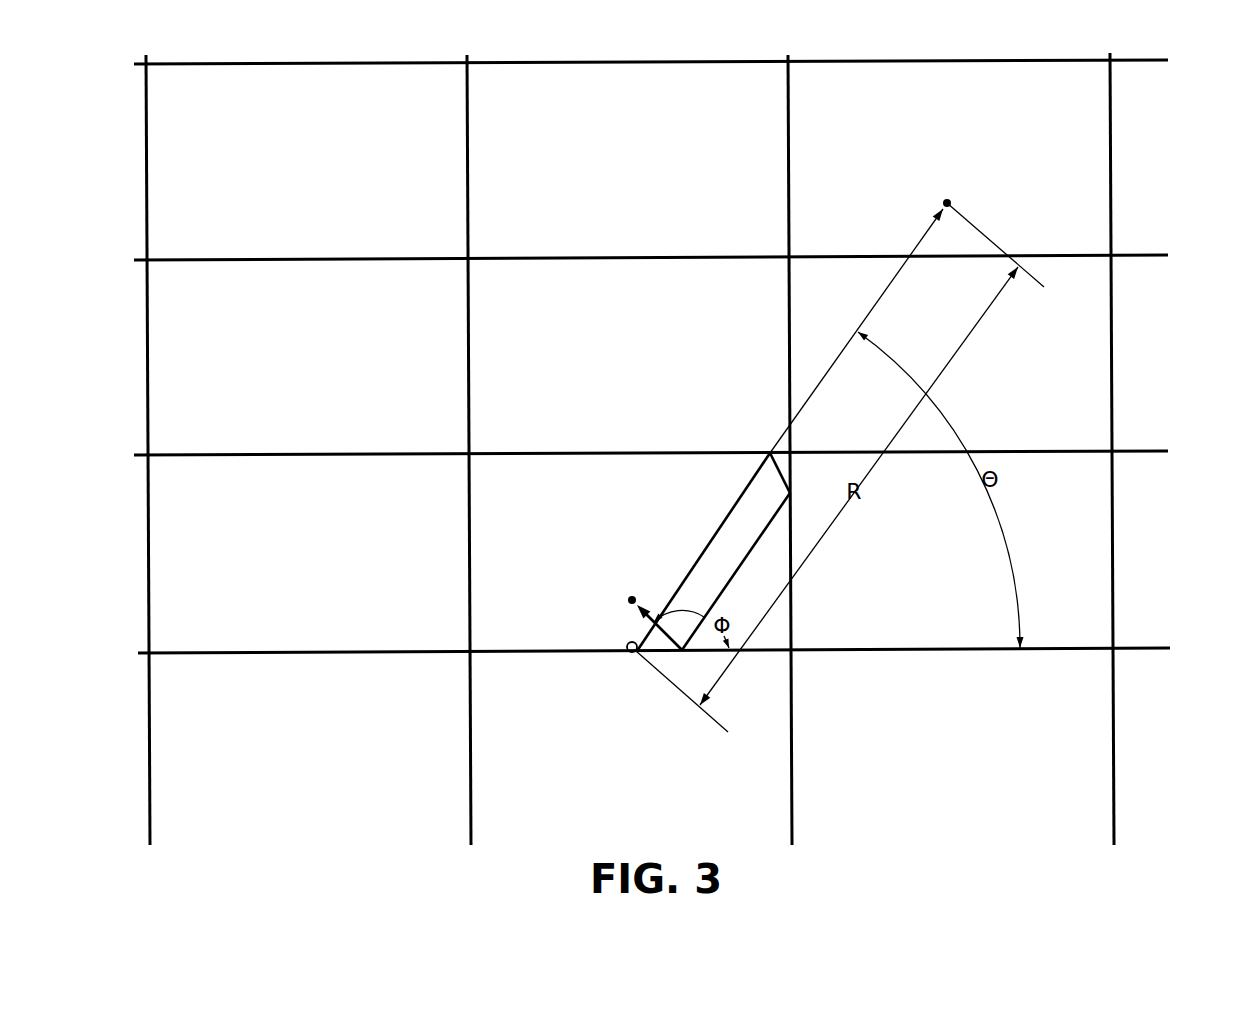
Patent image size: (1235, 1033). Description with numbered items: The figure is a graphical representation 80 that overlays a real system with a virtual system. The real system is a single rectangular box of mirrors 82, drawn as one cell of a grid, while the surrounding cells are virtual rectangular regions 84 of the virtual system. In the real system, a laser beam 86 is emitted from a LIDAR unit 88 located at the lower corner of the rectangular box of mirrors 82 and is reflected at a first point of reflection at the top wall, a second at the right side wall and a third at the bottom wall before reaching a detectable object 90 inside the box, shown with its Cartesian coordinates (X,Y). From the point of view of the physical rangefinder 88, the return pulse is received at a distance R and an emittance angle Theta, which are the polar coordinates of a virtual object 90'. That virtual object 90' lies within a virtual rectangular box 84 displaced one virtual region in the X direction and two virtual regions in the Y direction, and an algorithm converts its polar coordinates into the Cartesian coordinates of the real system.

The graphical representation 80 is at (1163, 47).
The rectangular box of mirrors 82 is at (608, 502).
The virtual rectangular regions 84 is at (266, 109).
The laser beam 86 is at (733, 500).
The LIDAR unit 88 is at (626, 644).
The detectable object 90 is at (632, 600).
The virtual object 90' is at (961, 229).